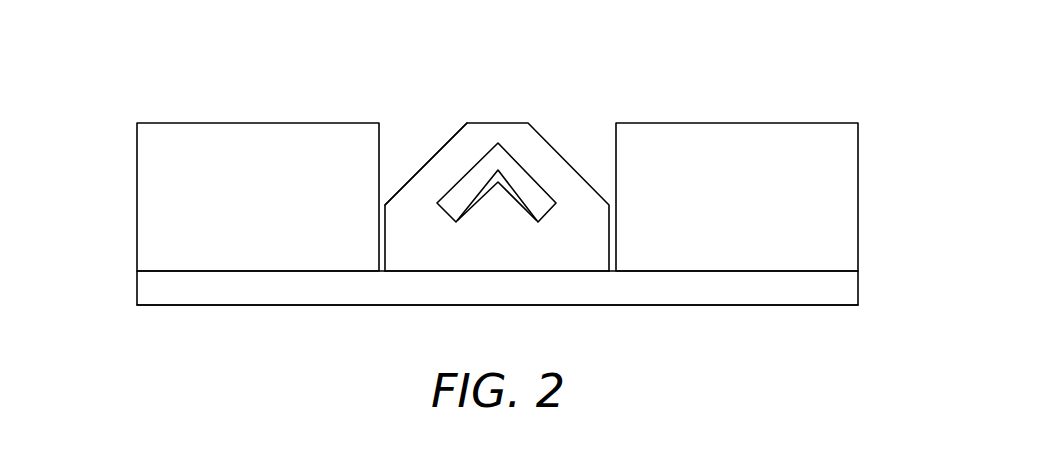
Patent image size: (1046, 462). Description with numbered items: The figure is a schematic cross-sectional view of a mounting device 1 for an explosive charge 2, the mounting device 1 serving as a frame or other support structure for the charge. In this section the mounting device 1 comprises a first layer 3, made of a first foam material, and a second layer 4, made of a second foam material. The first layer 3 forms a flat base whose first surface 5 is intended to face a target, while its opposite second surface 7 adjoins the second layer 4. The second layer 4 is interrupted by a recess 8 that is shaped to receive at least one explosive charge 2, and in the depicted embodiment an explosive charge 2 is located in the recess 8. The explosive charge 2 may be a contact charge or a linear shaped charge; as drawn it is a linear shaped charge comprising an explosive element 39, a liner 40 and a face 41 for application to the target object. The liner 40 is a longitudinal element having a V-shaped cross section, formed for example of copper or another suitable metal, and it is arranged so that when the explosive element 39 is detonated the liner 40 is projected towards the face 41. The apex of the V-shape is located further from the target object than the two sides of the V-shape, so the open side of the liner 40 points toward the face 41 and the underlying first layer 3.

The mounting device 1 is at (128, 96).
The explosive charge 2 is at (497, 132).
The first layer 3 is at (848, 287).
The second layer 4 is at (848, 153).
The first surface 5 is at (262, 306).
The second surface 7 is at (264, 270).
The recess 8 is at (410, 143).
The explosive element 39 is at (522, 180).
The liner 40 is at (527, 215).
The face 41 is at (428, 272).